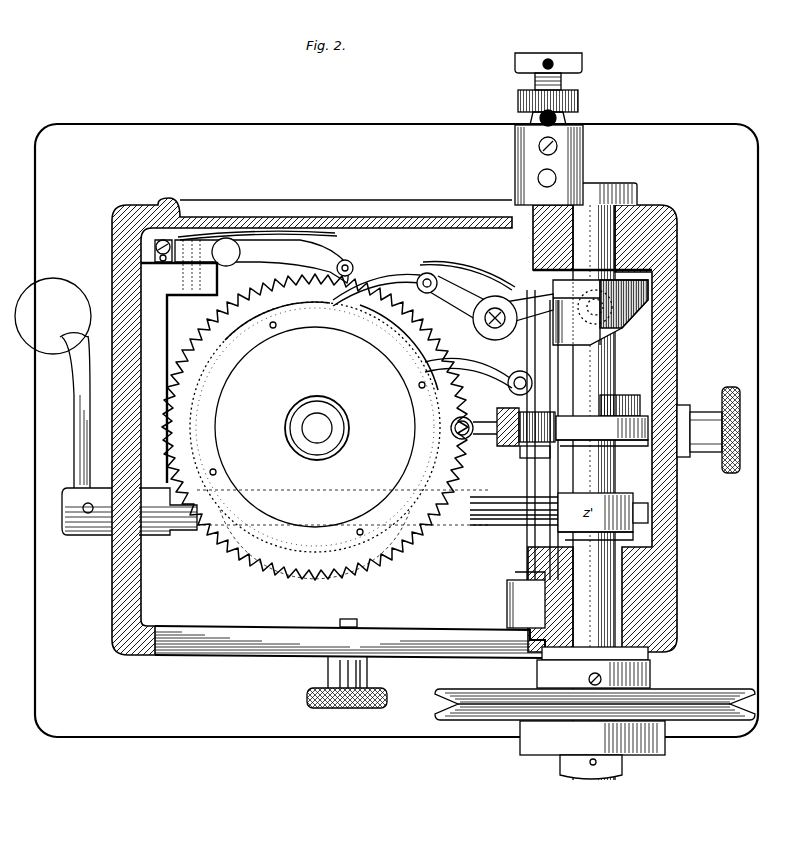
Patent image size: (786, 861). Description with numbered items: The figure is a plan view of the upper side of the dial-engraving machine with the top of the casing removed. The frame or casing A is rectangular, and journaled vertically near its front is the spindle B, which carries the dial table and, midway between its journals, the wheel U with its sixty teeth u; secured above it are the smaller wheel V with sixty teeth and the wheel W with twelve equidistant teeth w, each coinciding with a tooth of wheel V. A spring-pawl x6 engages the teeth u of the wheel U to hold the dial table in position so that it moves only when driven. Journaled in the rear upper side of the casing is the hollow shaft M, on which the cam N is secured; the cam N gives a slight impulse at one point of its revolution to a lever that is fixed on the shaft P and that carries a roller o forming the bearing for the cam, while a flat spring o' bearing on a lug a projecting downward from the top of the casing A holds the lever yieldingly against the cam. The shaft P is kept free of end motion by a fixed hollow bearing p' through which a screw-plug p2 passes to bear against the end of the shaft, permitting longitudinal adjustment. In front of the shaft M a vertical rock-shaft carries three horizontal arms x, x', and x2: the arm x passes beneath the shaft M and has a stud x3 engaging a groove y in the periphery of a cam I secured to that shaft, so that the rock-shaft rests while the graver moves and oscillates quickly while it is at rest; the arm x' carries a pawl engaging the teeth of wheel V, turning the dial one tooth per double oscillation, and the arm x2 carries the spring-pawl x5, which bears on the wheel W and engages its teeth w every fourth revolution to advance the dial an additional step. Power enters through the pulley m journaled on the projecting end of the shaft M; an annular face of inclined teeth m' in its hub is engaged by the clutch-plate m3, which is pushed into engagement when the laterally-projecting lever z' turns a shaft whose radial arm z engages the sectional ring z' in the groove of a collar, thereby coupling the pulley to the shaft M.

The frame or casing A is at (672, 372).
The spindle B is at (317, 428).
The wheel U is at (317, 428).
The second smaller wheel V is at (315, 544).
The third wheel W is at (315, 427).
The teeth w is at (320, 427).
The teeth u is at (340, 437).
The arm x is at (529, 308).
The arm x' is at (521, 371).
The arm x2 is at (468, 301).
The stud x3 is at (468, 367).
The spring-pawl x5 is at (385, 289).
The spring-pawl x6 is at (254, 260).
The groove y is at (570, 348).
The radial arm z is at (481, 539).
The sectional ring z' is at (106, 406).
The block I is at (600, 316).
The hollow shaft M is at (599, 481).
The cam N is at (602, 420).
The roller o is at (526, 433).
The flat spring o' is at (495, 434).
The shaft P is at (514, 502).
The lug a is at (474, 428).
The fixed hollow bearing p' is at (558, 147).
The screw-plug p2 is at (565, 82).
The pulley m is at (594, 713).
The annular face of inclined teeth m' is at (700, 680).
The clutch-plate m3 is at (575, 741).